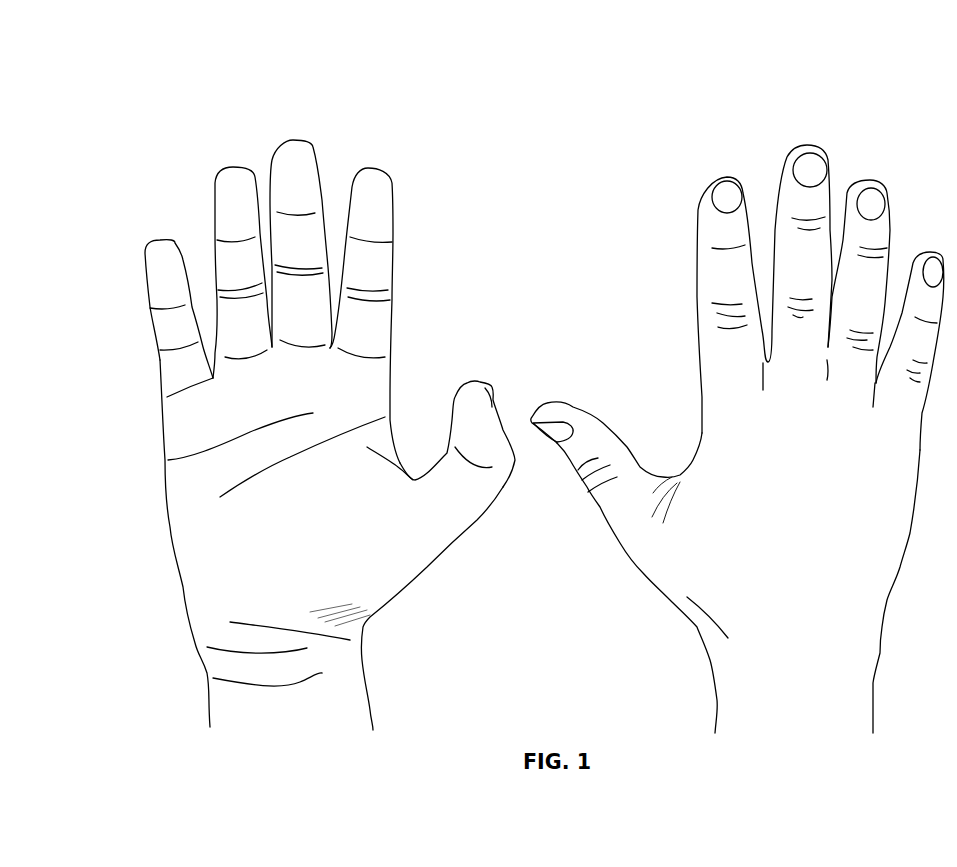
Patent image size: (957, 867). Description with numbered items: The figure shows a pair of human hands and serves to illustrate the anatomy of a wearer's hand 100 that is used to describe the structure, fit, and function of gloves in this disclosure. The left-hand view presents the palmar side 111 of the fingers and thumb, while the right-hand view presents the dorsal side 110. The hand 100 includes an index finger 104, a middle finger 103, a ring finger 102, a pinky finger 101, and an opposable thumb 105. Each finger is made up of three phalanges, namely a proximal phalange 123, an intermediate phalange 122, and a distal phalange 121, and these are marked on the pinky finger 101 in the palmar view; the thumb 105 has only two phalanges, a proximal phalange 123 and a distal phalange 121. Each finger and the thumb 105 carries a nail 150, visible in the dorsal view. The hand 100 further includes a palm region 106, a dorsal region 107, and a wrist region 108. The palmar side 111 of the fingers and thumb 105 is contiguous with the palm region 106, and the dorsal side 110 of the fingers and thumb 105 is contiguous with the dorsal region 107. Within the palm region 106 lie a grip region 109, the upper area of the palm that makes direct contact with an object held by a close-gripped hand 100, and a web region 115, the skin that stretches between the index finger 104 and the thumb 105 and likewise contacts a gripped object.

The hand 100 is at (219, 72).
The pinky finger 101 is at (145, 238).
The ring finger 102 is at (215, 175).
The middle finger 103 is at (312, 138).
The index finger 104 is at (387, 172).
The thumb 105 is at (475, 373).
The palm region 106 is at (302, 457).
The dorsal region 107 is at (763, 559).
The wrist region 108 is at (288, 654).
The grip region 109 is at (240, 418).
The dorsal side 110 is at (667, 348).
The palmar side 111 is at (422, 280).
The web region 115 is at (683, 475).
The distal phalange 121 is at (165, 280).
The intermediate phalange 122 is at (175, 322).
The proximal phalange 123 is at (182, 365).
The nail 150 is at (738, 190).